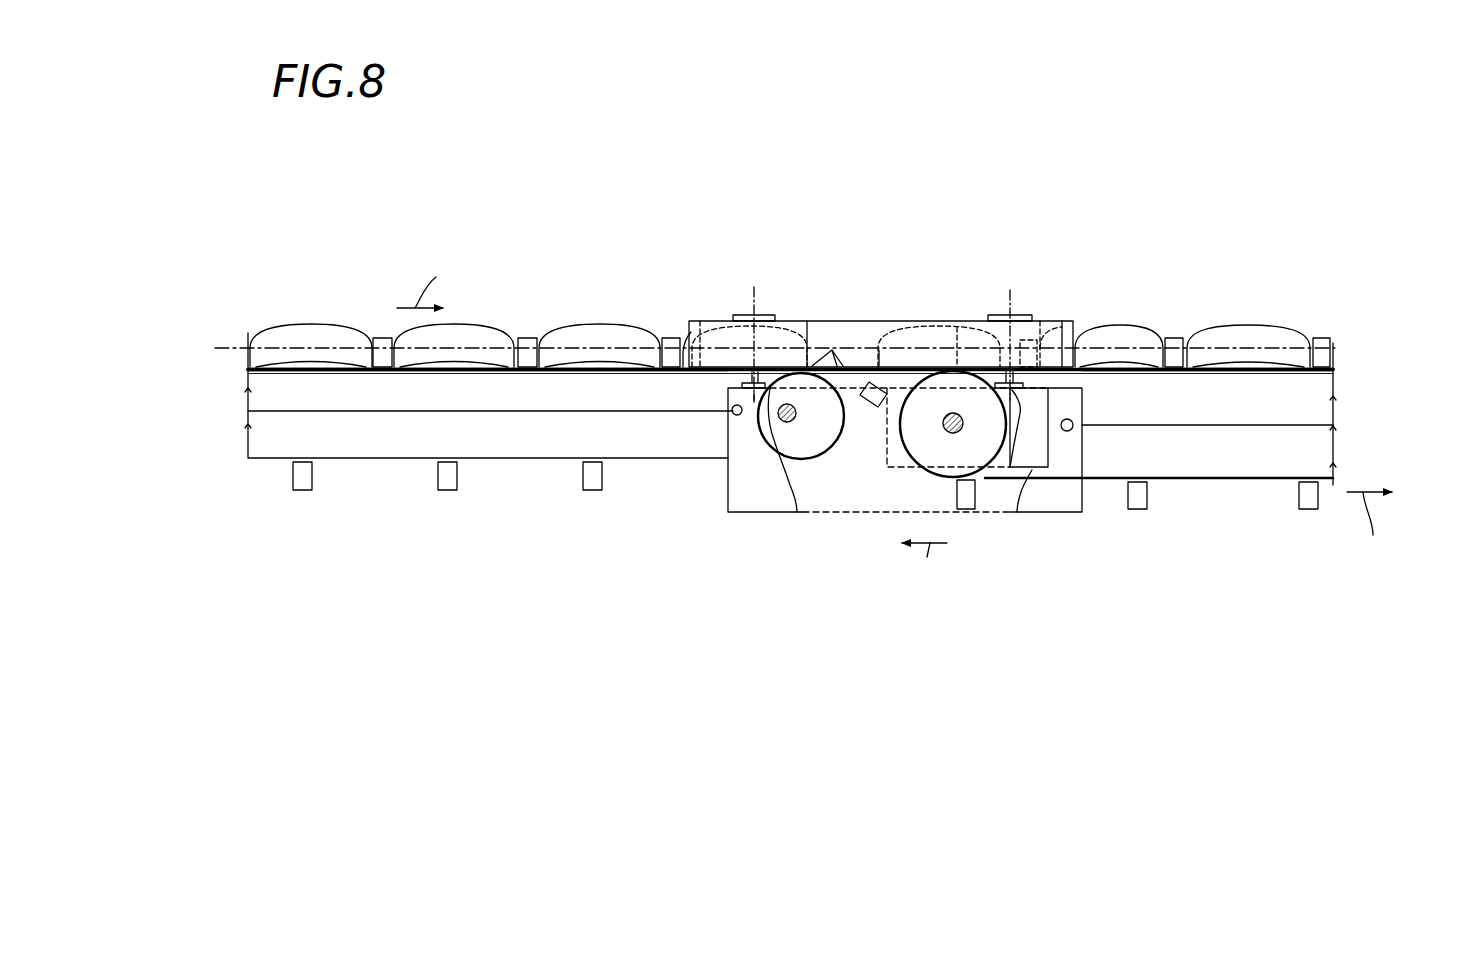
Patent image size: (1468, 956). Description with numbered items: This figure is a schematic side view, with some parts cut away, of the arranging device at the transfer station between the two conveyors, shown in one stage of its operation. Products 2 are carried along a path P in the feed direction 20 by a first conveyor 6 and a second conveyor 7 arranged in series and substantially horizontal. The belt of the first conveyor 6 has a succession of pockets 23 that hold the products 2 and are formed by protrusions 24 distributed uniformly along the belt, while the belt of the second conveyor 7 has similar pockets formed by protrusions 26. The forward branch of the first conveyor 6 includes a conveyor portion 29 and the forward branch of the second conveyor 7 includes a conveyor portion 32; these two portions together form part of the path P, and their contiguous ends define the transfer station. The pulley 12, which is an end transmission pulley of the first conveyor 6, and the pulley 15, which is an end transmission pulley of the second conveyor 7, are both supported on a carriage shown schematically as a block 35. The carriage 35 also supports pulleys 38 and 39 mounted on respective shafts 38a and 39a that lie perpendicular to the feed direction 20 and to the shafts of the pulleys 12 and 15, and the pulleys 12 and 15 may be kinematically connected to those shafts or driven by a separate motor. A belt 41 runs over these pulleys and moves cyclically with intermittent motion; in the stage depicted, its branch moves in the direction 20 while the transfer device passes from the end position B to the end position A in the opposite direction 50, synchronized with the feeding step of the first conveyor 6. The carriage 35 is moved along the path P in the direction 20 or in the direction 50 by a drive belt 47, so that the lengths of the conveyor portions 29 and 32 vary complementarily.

The products 2 is at (312, 340).
The first conveyor belt 6 is at (288, 378).
The second conveyor belt 7 is at (1273, 387).
The pulley 12 is at (803, 418).
The pulley 15 is at (955, 390).
The feed direction 20 is at (896, 415).
The pockets 23 is at (515, 477).
The protrusions 24 is at (381, 357).
The protrusions 26 is at (1033, 340).
The conveyor portion 29 is at (284, 316).
The conveyor portion 32 is at (1293, 313).
The carriage 35 is at (742, 488).
The pulley 38 is at (712, 322).
The shaft 38a is at (740, 315).
The pulley 39 is at (988, 326).
The shaft 39a is at (1022, 315).
The belt 41 is at (852, 318).
The drive belt 47 is at (292, 418).
The opposite direction 50 is at (924, 565).
The path P is at (238, 345).
The end position A is at (780, 253).
The end position B is at (806, 244).